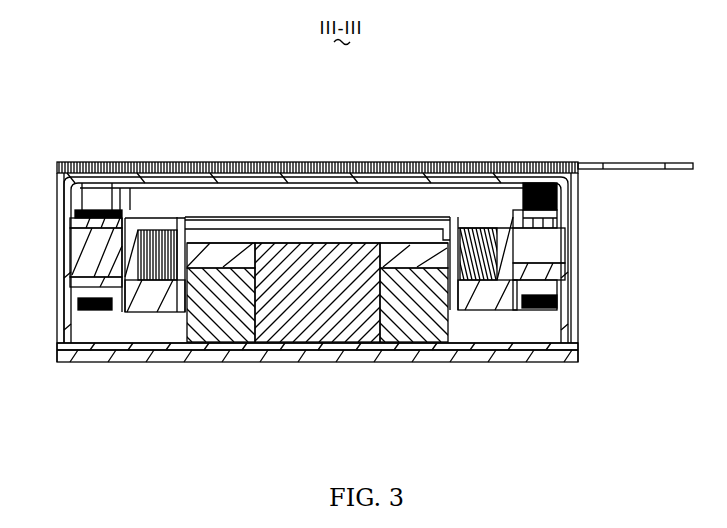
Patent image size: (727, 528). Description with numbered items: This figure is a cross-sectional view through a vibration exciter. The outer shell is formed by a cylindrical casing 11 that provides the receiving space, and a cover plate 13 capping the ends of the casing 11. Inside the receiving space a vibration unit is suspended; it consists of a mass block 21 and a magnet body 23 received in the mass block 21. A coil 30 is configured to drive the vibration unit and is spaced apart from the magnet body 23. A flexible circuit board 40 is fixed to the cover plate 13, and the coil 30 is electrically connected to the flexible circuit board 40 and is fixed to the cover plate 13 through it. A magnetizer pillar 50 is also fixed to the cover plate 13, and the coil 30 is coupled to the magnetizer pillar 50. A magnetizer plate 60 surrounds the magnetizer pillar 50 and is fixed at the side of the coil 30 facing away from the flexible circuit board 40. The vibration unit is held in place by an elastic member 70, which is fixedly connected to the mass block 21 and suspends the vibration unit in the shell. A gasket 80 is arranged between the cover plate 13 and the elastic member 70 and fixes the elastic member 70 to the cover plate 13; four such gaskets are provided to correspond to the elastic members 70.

The casing 11 is at (573, 234).
The cover plate 13 is at (422, 355).
The mass block 21 is at (83, 252).
The magnet body 23 is at (165, 236).
The coil 30 is at (229, 323).
The flexible circuit board 40 is at (172, 345).
The magnetizer pillar 50 is at (300, 325).
The magnetizer plate 60 is at (415, 252).
The elastic member 70 is at (557, 300).
The gasket 80 is at (557, 198).